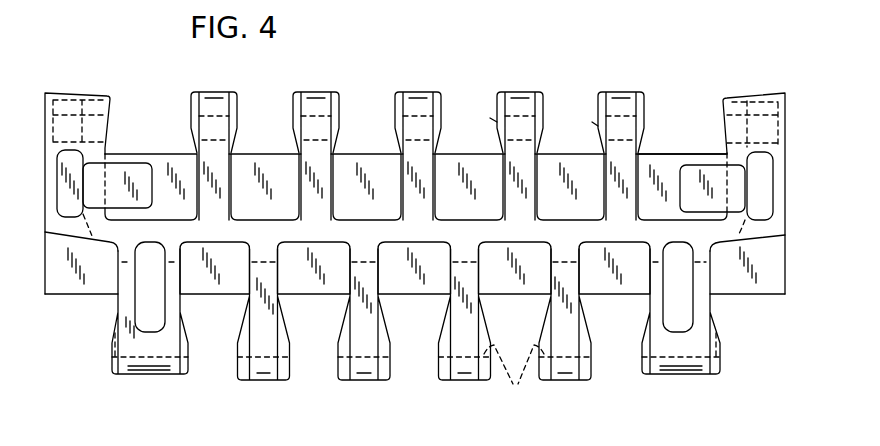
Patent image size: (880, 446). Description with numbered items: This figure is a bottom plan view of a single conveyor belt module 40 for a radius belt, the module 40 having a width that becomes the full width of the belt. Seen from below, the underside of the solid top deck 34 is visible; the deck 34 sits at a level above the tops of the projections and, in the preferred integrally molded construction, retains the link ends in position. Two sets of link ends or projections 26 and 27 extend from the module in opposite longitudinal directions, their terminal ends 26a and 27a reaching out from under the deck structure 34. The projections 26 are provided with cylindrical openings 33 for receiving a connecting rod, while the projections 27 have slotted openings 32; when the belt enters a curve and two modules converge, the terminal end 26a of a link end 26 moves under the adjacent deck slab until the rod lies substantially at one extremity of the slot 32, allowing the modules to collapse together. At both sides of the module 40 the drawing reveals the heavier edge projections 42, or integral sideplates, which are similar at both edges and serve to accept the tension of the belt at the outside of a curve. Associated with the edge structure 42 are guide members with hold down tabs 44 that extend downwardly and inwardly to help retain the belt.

The link end 26 is at (412, 93).
The terminal end 26a is at (77, 96).
The link end 27 is at (262, 378).
The terminal end 27a is at (153, 376).
The slotted opening 32 is at (514, 379).
The cylindrical opening 33 is at (490, 118).
The solid top deck 34 is at (253, 192).
The module 40 is at (674, 66).
The edge structure 42 is at (66, 86).
The hold down tab 44 is at (128, 180).